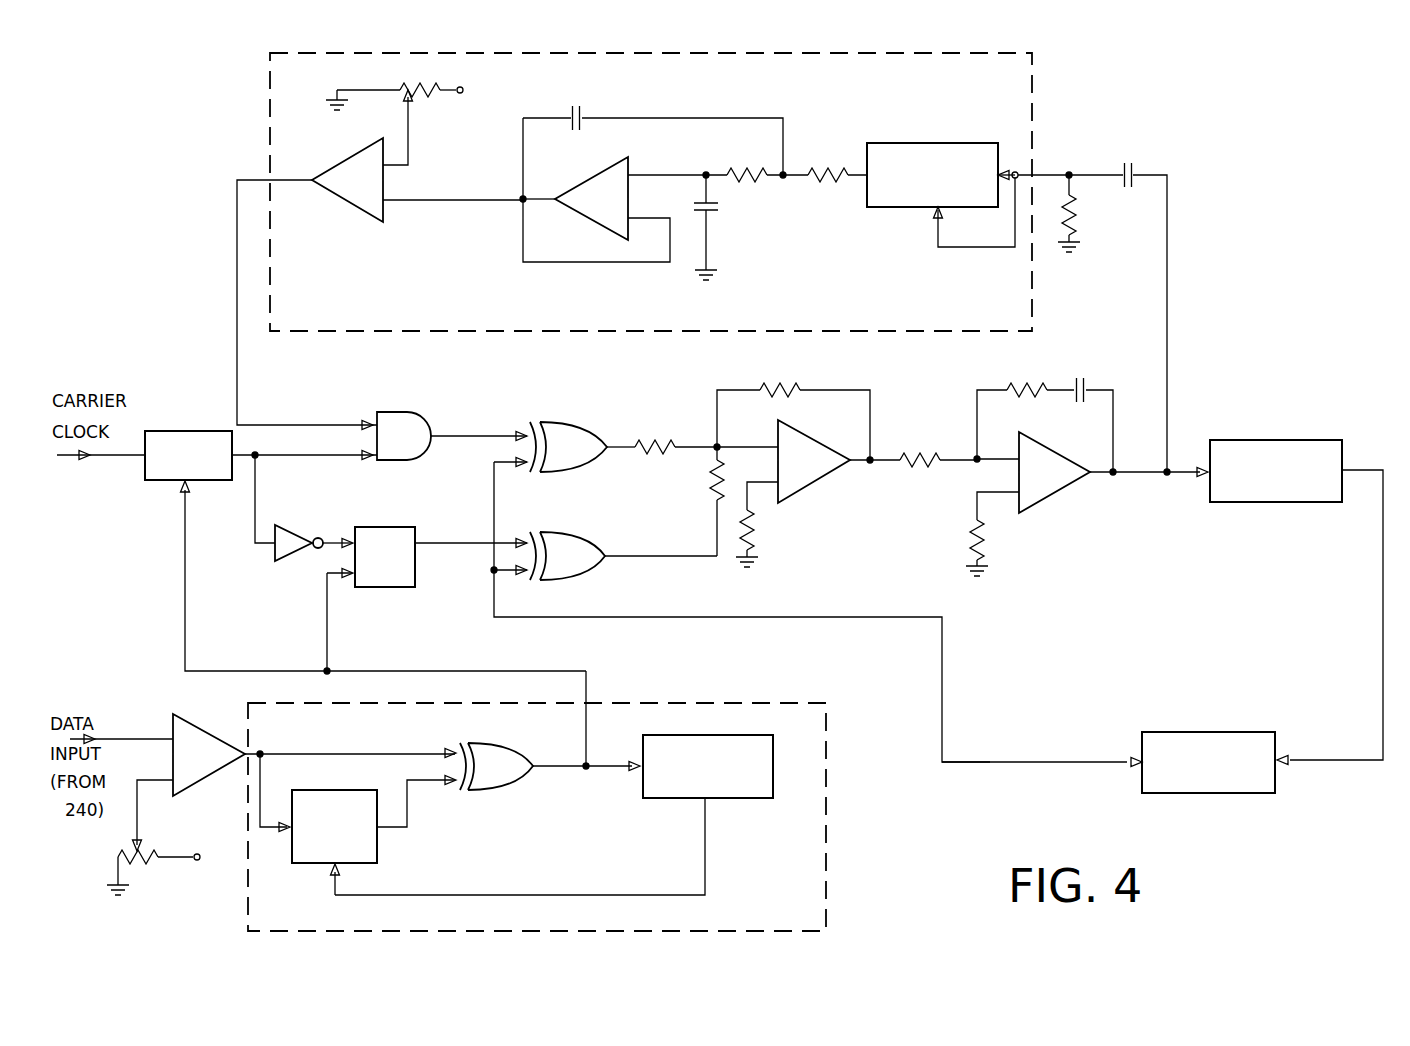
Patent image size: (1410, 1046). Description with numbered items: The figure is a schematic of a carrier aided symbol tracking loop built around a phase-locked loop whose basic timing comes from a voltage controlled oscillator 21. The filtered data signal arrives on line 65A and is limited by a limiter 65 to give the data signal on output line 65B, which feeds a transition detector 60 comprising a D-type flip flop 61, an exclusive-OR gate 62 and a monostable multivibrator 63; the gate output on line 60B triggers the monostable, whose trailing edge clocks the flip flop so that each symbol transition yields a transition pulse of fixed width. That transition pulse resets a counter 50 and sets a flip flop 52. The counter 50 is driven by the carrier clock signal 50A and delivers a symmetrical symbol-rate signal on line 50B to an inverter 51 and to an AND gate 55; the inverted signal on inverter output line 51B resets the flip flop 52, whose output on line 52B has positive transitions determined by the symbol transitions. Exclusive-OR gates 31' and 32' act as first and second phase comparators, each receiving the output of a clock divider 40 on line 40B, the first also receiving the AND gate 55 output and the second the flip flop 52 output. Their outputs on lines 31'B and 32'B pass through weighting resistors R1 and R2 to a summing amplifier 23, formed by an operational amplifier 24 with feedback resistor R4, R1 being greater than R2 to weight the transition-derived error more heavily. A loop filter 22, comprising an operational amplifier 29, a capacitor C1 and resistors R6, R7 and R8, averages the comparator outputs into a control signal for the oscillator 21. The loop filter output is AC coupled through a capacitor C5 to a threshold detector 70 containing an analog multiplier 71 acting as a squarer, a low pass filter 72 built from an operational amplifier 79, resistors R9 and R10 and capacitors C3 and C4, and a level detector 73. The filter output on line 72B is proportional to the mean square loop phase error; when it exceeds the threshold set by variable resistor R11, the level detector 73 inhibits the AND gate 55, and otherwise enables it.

The threshold detector 70 is at (275, 138).
The level detector 73 is at (341, 193).
The line 72B is at (419, 203).
The variable resistor R11 is at (417, 88).
The operational amplifier 79 is at (586, 213).
The capacitor C4 is at (653, 127).
The capacitor C3 is at (719, 206).
The resistor R10 is at (756, 156).
The resistor R9 is at (847, 175).
The low pass filter 72 is at (781, 240).
The analog multiplier 71 is at (903, 148).
The capacitor C5 is at (1136, 163).
The counter 50 is at (153, 431).
The carrier clock signal 50A is at (131, 457).
The line 50B is at (251, 455).
The AND gate 55 is at (405, 414).
The inverter 51 is at (282, 556).
The inverter output line 51B is at (322, 553).
The flip flop 52 is at (379, 528).
The line 52B is at (455, 542).
The exclusive-OR gate 31' is at (568, 430).
The line 31'B is at (626, 467).
The exclusive-OR gate 32' is at (569, 543).
The line 32'B is at (661, 574).
The weighting resistor R1 is at (651, 445).
The weighting resistor R2 is at (712, 466).
The feedback resistor R4 is at (770, 388).
The operational amplifier 24 is at (813, 449).
The summing amplifier 23 is at (832, 490).
The resistor R6 is at (930, 458).
The resistor R7 is at (1033, 390).
The capacitor C1 is at (1078, 381).
The resistor R8 is at (972, 529).
The operational amplifier 29 is at (1046, 459).
The loop filter 22 is at (1081, 500).
The voltage controlled oscillator 21 is at (1263, 500).
The clock divider 40 is at (1212, 735).
The line 40B is at (991, 763).
The limiter 65 is at (212, 735).
The line 65A is at (125, 739).
The output line 65B is at (243, 769).
The transition detector 60 is at (818, 856).
The line 60B is at (588, 683).
The D-type flip flop 61 is at (316, 793).
The exclusive-OR gate 62 is at (513, 776).
The monostable multivibrator 63 is at (659, 794).